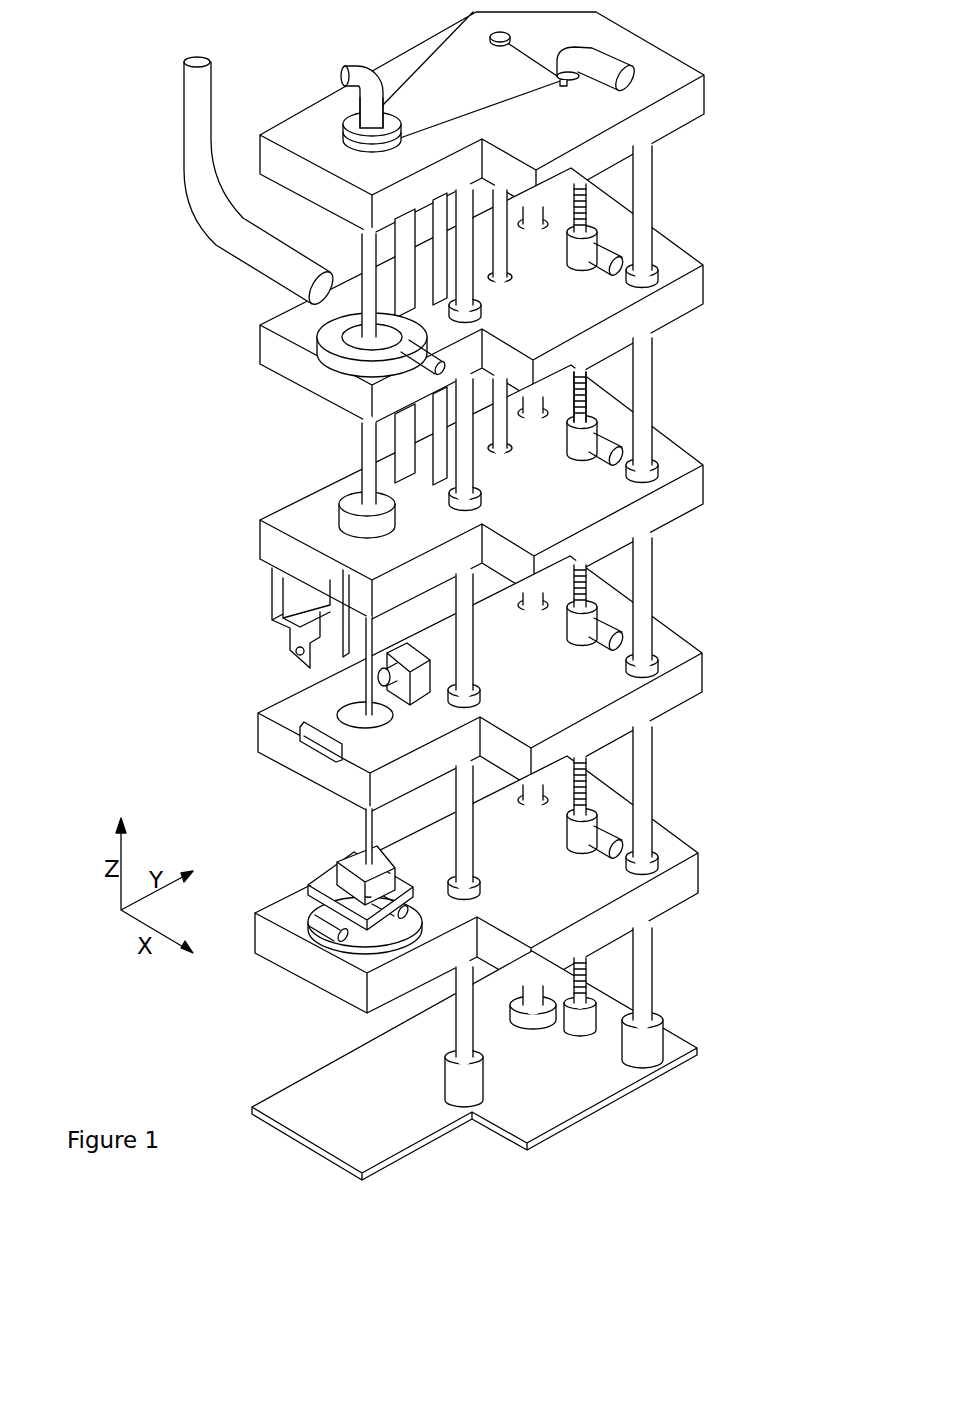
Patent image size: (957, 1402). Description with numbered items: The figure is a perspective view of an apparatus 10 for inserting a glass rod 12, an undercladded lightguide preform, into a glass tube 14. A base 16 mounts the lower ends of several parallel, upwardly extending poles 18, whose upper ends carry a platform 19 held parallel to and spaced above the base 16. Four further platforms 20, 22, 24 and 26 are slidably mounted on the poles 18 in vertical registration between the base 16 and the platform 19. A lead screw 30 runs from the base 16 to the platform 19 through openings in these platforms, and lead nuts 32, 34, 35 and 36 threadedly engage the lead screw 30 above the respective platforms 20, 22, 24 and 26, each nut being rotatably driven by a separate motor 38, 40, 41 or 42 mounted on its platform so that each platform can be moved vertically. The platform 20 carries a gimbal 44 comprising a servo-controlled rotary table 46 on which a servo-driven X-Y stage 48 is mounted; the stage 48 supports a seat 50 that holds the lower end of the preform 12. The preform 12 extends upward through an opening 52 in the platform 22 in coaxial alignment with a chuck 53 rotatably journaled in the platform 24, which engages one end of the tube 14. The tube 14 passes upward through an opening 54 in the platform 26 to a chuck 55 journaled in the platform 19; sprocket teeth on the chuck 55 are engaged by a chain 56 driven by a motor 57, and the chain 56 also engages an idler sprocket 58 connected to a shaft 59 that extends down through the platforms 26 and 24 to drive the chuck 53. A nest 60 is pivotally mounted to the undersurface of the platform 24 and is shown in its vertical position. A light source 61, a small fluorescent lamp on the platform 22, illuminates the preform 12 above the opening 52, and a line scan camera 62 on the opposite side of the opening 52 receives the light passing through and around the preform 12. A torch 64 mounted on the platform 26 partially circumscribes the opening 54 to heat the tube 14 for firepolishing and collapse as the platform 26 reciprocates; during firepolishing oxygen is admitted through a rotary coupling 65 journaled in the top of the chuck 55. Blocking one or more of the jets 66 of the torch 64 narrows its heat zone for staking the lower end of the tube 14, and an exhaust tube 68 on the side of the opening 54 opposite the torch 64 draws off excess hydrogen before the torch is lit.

The apparatus 10 is at (136, 1050).
The glass rod 12 is at (366, 683).
The glass tube 14 is at (362, 486).
The base 16 is at (560, 1108).
The poles 18 is at (654, 975).
The platform 19 is at (660, 125).
The platform 20 is at (699, 873).
The platform 22 is at (703, 675).
The platform 24 is at (700, 476).
The platform 26 is at (704, 286).
The lead screw 30 is at (587, 792).
The lead nut 32 is at (574, 838).
The lead nut 34 is at (574, 630).
The lead nut 35 is at (586, 445).
The lead nut 36 is at (577, 252).
The motor 38 is at (600, 855).
The motor 40 is at (604, 647).
The motor 41 is at (595, 422).
The motor 42 is at (606, 275).
The gimbal 44 is at (322, 861).
The rotary table 46 is at (355, 970).
The X-Y stage 48 is at (325, 893).
The seat 50 is at (386, 860).
The opening 52 is at (392, 716).
The chuck 53 is at (340, 515).
The opening 54 is at (310, 312).
The chuck 55 is at (357, 125).
The chain 56 is at (450, 63).
The motor 57 is at (612, 63).
The idler sprocket 58 is at (490, 36).
The shaft 59 is at (503, 432).
The nest 60 is at (268, 607).
The light source 61 is at (326, 746).
The line scan camera 62 is at (408, 657).
The torch 64 is at (345, 352).
The rotary coupling 65 is at (368, 100).
The jets 66 is at (412, 288).
The exhaust tube 68 is at (255, 258).